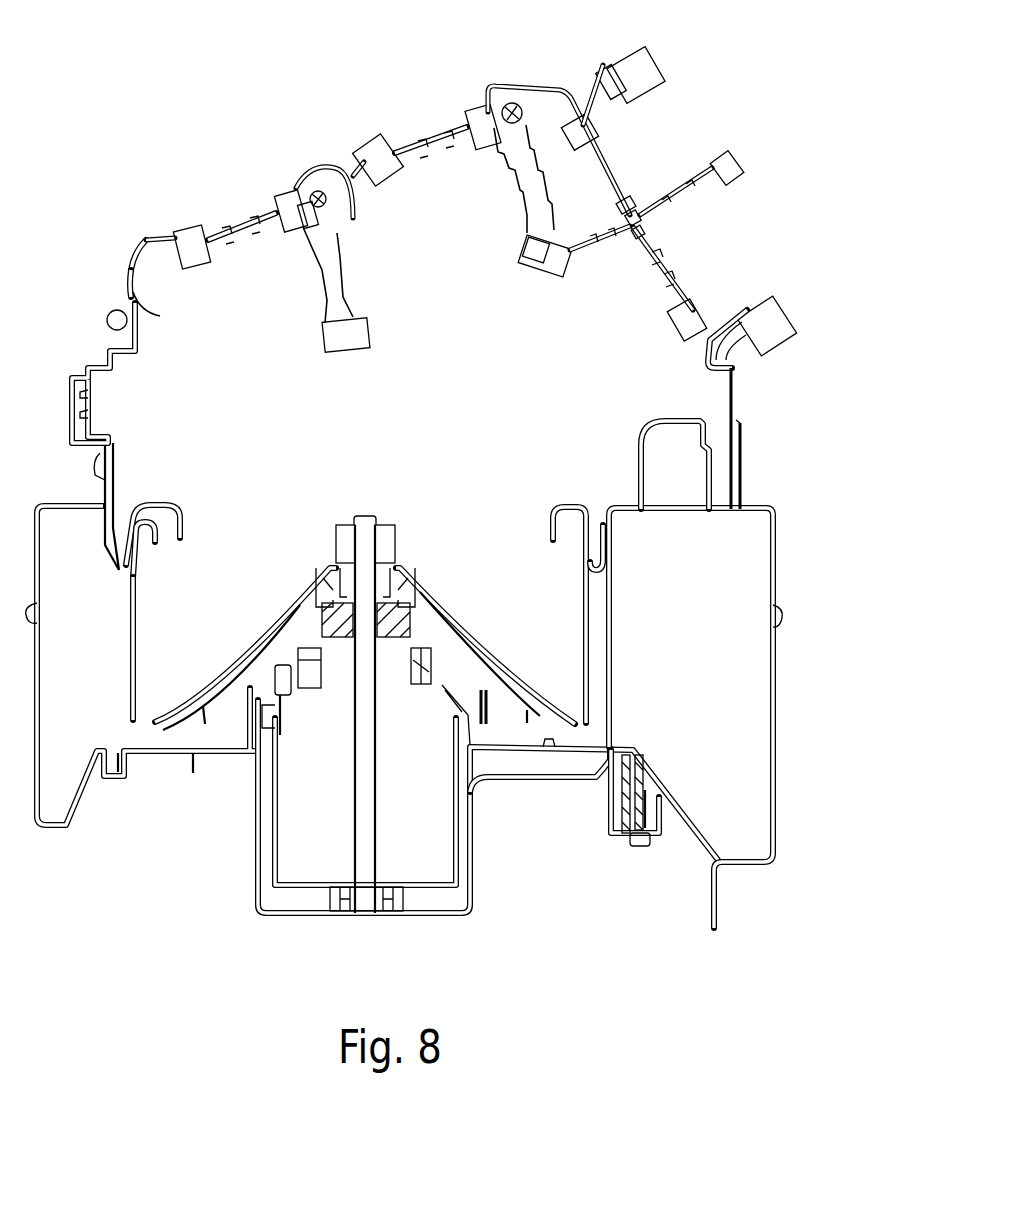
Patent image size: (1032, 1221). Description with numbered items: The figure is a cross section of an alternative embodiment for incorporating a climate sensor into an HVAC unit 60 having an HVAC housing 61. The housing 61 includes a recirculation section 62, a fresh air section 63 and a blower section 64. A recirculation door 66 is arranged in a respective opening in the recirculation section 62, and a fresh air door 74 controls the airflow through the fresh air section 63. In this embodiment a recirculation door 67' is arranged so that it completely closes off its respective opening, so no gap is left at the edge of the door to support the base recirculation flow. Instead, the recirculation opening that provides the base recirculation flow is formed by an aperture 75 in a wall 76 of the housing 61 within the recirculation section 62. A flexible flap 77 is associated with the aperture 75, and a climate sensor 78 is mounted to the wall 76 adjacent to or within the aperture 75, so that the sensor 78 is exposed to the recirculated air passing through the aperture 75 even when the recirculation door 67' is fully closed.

The HVAC unit 60 is at (773, 445).
The HVAC housing 61 is at (98, 480).
The recirculation section 62 is at (153, 247).
The fresh air section 63 is at (647, 93).
The blower section 64 is at (775, 793).
The recirculation door 66 is at (430, 140).
The recirculation door 67' is at (289, 258).
The fresh air door 74 is at (680, 277).
The aperture 75 is at (128, 297).
The wall 76 is at (138, 263).
The flexible flap 77 is at (143, 300).
The climate sensor 78 is at (107, 320).